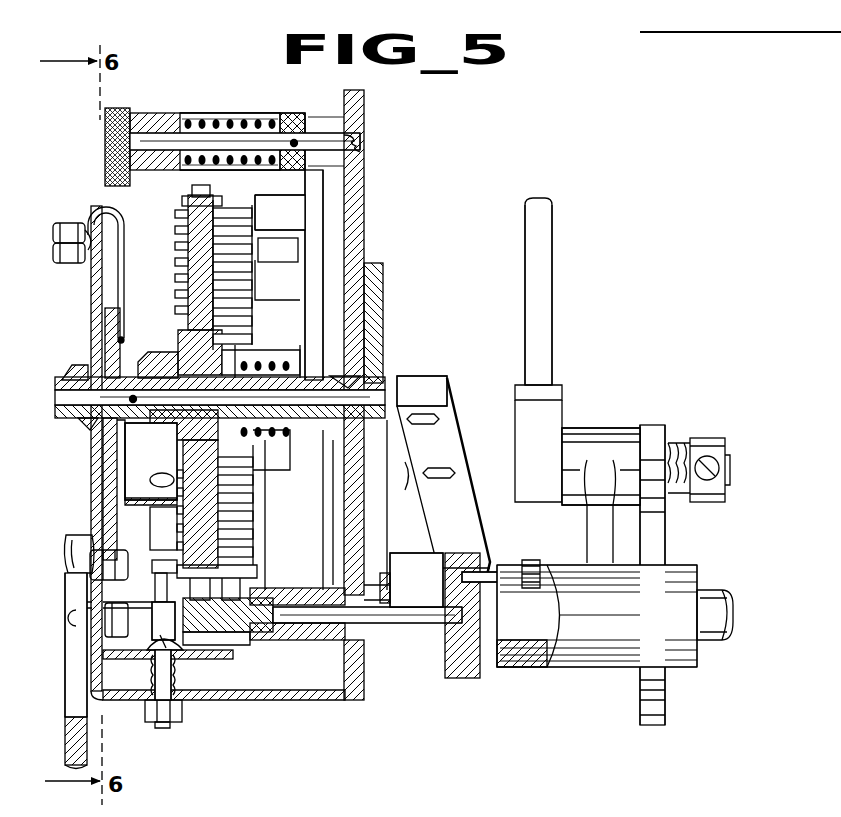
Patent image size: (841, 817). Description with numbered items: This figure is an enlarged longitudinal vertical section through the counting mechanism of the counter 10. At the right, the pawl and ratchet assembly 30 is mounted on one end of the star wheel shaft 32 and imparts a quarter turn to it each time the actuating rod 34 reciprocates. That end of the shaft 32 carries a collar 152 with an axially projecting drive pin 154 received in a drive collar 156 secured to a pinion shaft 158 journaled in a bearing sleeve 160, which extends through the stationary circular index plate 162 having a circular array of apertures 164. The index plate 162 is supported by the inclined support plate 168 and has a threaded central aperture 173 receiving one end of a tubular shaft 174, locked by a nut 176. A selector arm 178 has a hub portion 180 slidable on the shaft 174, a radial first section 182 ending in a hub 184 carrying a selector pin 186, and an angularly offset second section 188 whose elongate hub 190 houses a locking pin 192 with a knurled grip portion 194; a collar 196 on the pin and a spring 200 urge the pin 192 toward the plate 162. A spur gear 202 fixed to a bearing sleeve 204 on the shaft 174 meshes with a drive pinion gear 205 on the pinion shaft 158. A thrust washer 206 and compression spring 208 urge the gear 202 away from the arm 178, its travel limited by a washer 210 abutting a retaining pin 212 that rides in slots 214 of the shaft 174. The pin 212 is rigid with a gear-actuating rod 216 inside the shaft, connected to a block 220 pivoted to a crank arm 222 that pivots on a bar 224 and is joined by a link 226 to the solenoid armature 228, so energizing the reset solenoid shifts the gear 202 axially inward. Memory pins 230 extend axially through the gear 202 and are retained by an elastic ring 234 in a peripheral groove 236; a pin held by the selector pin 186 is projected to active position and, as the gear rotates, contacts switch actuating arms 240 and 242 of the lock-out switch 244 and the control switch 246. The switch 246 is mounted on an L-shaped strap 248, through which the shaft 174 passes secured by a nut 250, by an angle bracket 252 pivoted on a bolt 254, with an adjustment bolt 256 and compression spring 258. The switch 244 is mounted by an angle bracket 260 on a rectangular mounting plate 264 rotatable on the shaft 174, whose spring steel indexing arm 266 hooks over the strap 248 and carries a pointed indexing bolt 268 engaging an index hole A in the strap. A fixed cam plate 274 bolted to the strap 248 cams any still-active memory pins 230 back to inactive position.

The counter 10 is at (395, 182).
The pawl and ratchet assembly 30 is at (652, 425).
The shaft 32 is at (548, 607).
The actuating rod 34 is at (548, 235).
The collar 152 is at (546, 652).
The drive pin 154 is at (488, 578).
The drive collar 156 is at (470, 655).
The pinion shaft 158 is at (430, 612).
The bearing sleeve 160 is at (398, 589).
The index plate 162 is at (356, 220).
The apertures 164 is at (356, 140).
The support plate 168 is at (380, 284).
The threaded central aperture 173 is at (352, 378).
The tubular shaft 174 is at (360, 380).
The nut 176 is at (333, 452).
The selector arm 178 is at (210, 128).
The hub portion 180 is at (265, 430).
The first section 182 is at (302, 302).
The hub 184 is at (314, 222).
The selector pin 186 is at (272, 250).
The second section 188 is at (290, 197).
The hub 190 is at (176, 116).
The locking pin 192 is at (323, 134).
The knurled grip portion 194 is at (104, 150).
The collar 196 is at (292, 116).
The spring 200 is at (246, 118).
The spur gear 202 is at (190, 207).
The bearing sleeve 204 is at (160, 378).
The drive pinion gear 205 is at (258, 610).
The thrust washer 206 is at (236, 352).
The compression spring 208 is at (278, 364).
The washer 210 is at (142, 372).
The retaining pin 212 is at (88, 426).
The slots 214 is at (128, 396).
The gear-actuating rod 216 is at (390, 386).
The block 220 is at (432, 388).
The crank arm 222 is at (462, 426).
The bar 224 is at (401, 505).
The link 226 is at (428, 534).
The armature 228 is at (411, 580).
The memory pins 230 is at (178, 298).
The elastic ring 234 is at (208, 212).
The peripheral groove 236 is at (202, 196).
The switch actuating arm 240 is at (160, 565).
The switch actuating arm 242 is at (160, 590).
The lock-out switch 244 is at (158, 519).
The control switch 246 is at (180, 628).
The L-shaped strap 248 is at (92, 327).
The nut 250 is at (80, 368).
The angle bracket 252 is at (140, 652).
The bolt 254 is at (72, 625).
The adjustment bolt 256 is at (168, 722).
The compression spring 258 is at (178, 673).
The angle bracket 260 is at (175, 480).
The mounting plate 264 is at (112, 473).
The indexing arm 266 is at (100, 206).
The indexing bolt 268 is at (84, 277).
The cam plate 274 is at (68, 582).
The index hole A is at (90, 258).